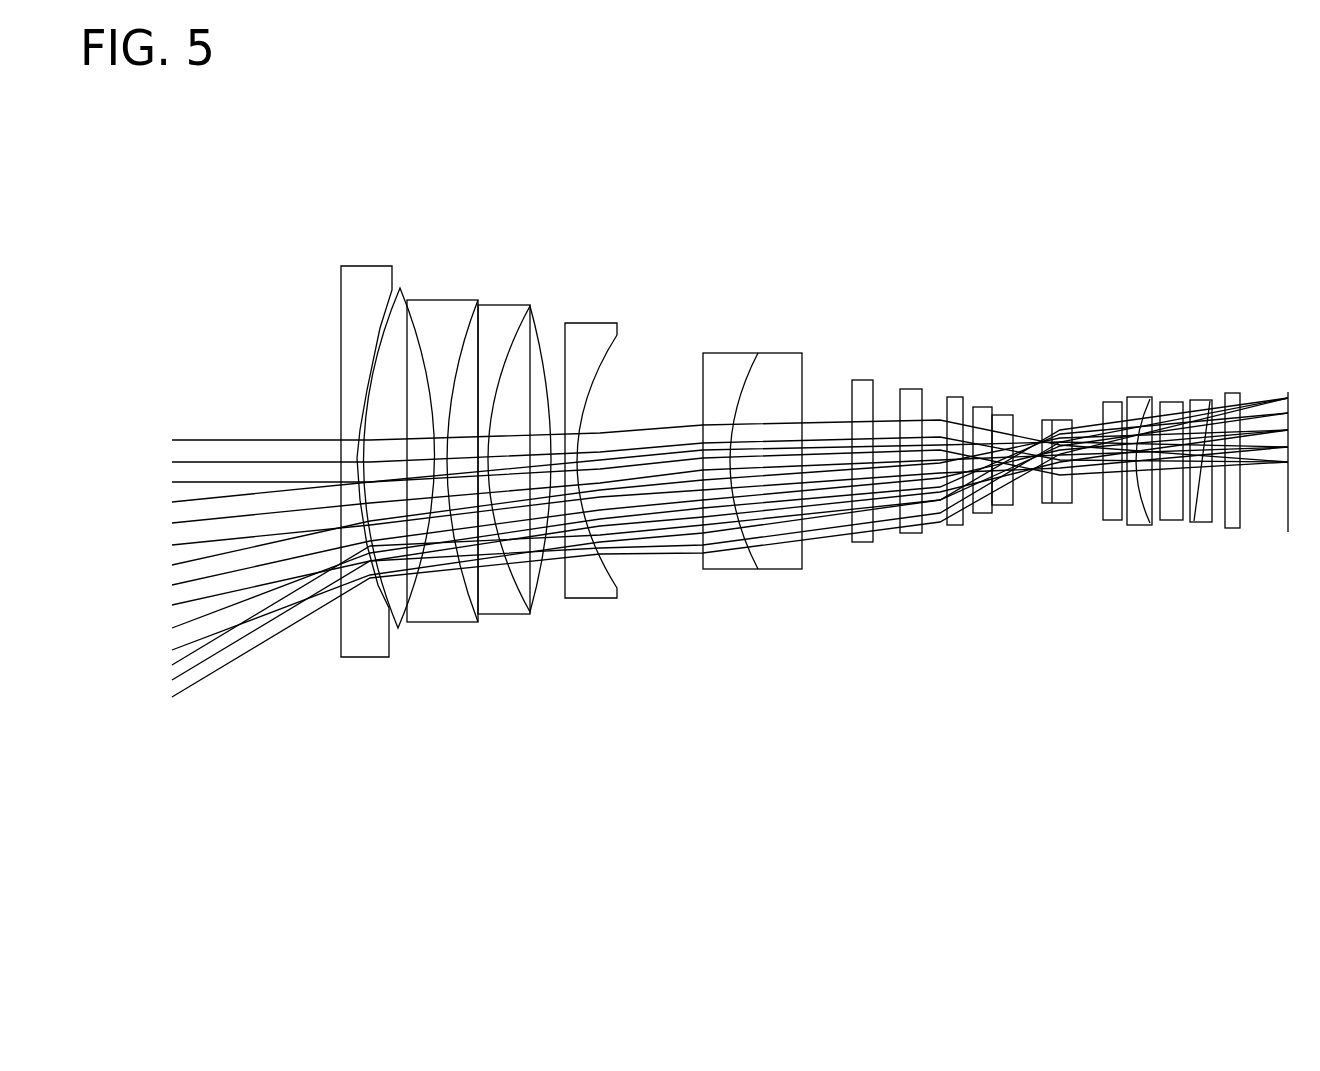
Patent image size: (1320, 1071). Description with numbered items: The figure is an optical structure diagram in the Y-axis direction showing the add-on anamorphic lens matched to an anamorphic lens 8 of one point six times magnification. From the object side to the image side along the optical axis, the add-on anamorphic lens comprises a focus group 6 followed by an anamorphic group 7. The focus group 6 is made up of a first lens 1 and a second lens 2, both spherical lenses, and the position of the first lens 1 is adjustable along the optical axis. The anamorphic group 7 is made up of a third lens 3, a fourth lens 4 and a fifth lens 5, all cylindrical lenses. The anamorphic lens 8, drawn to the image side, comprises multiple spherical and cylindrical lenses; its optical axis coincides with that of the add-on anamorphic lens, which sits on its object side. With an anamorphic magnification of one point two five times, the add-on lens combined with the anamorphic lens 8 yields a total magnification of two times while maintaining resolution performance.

The first lens 1 is at (365, 657).
The second lens 2 is at (400, 628).
The third lens 3 is at (440, 614).
The fourth lens 4 is at (498, 612).
The fifth lens 5 is at (529, 612).
The focus group 6 is at (388, 544).
The anamorphic group 7 is at (494, 561).
The anamorphic lens 8 is at (922, 641).